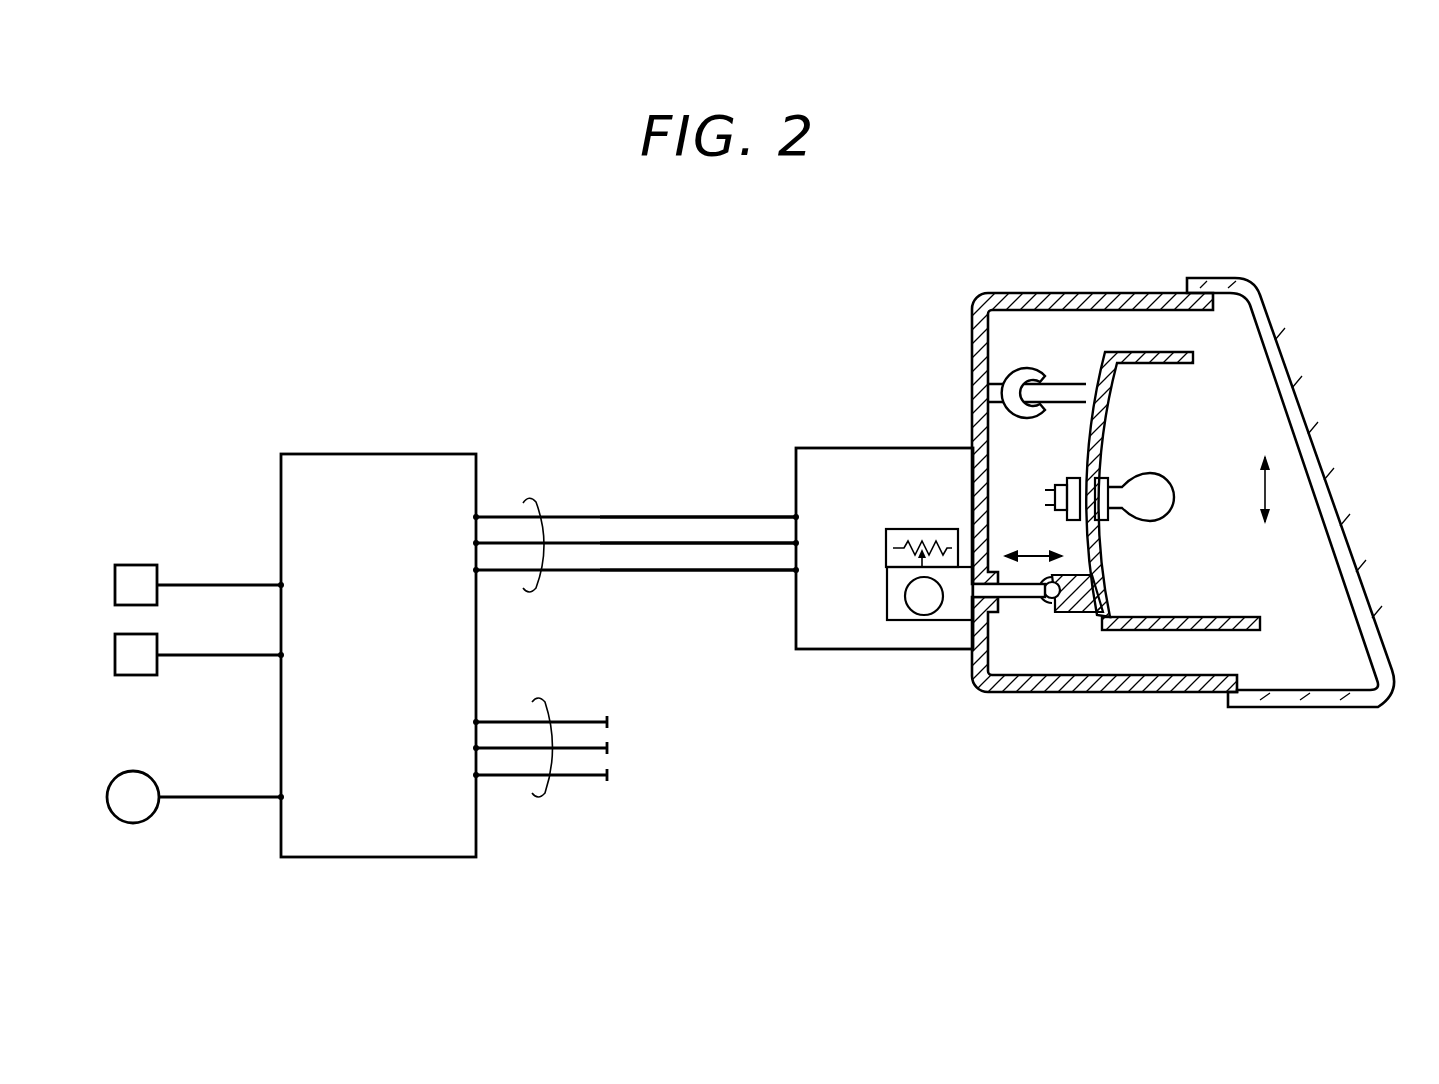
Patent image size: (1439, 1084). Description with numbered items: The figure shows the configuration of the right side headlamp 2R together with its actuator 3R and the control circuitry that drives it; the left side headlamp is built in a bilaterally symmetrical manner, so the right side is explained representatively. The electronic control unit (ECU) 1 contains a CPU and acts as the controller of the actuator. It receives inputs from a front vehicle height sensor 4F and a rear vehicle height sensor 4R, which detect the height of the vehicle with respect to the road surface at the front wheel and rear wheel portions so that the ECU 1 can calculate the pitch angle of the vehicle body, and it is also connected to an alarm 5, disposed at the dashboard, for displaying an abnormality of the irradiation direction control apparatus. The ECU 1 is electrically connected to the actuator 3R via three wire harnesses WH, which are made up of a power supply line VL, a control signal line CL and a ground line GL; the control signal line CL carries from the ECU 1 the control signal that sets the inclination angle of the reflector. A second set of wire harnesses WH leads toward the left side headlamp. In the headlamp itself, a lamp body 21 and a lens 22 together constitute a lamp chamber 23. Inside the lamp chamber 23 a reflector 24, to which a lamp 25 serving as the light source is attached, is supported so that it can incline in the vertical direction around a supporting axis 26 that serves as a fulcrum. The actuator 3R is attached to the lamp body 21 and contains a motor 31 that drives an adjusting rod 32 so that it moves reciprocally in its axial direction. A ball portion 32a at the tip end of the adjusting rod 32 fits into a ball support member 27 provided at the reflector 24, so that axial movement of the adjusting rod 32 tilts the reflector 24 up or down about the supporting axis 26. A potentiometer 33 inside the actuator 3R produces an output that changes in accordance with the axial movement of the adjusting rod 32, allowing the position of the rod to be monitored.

The electronic control unit (ECU) 1 is at (320, 452).
The right side headlamp 2R is at (1072, 290).
The right side actuator 3R is at (830, 447).
The front vehicle height sensor 4F is at (133, 565).
The rear vehicle height sensor 4R is at (133, 676).
The alarm 5 is at (128, 823).
The lamp body 21 is at (975, 300).
The lens 22 is at (1335, 492).
The lamp chamber 23 is at (1302, 655).
The reflector 24 is at (1184, 625).
The lamp 25 is at (1150, 485).
The supporting axis 26 is at (1056, 382).
The ball support member 27 is at (1073, 610).
The motor 31 is at (897, 622).
The adjusting rod 32 is at (1018, 598).
The ball portion 32a is at (1046, 602).
The potentiometer 33 is at (905, 537).
The wire harness WH is at (636, 646).
The power supply line VL is at (712, 516).
The control signal line CL is at (716, 544).
The ground (GND) line GL is at (765, 571).